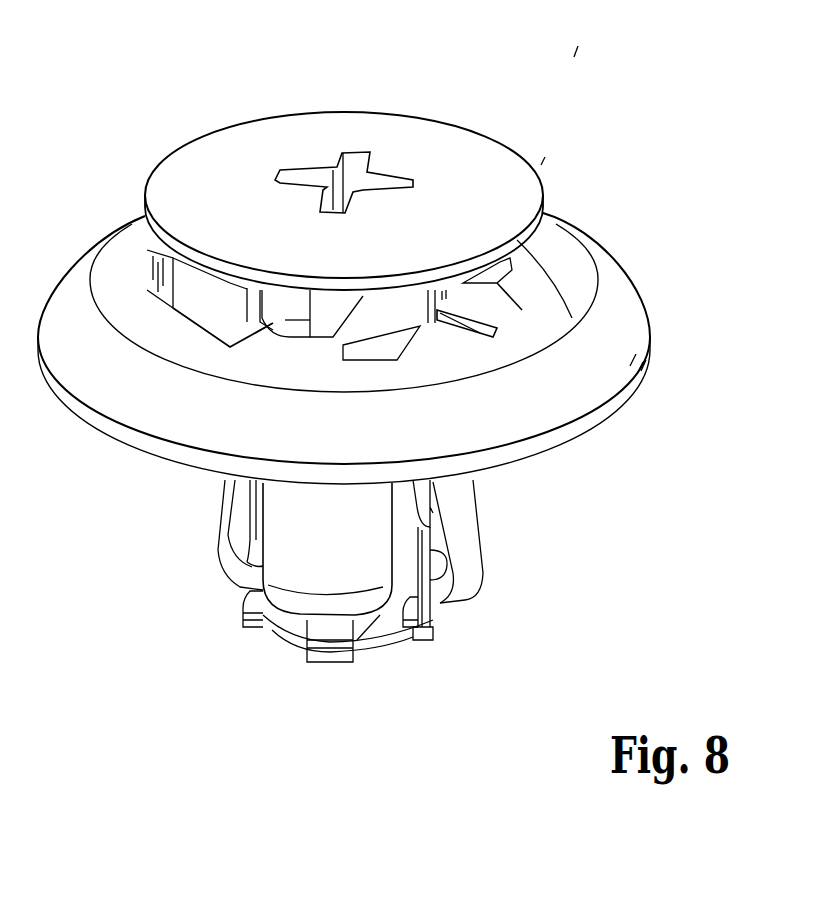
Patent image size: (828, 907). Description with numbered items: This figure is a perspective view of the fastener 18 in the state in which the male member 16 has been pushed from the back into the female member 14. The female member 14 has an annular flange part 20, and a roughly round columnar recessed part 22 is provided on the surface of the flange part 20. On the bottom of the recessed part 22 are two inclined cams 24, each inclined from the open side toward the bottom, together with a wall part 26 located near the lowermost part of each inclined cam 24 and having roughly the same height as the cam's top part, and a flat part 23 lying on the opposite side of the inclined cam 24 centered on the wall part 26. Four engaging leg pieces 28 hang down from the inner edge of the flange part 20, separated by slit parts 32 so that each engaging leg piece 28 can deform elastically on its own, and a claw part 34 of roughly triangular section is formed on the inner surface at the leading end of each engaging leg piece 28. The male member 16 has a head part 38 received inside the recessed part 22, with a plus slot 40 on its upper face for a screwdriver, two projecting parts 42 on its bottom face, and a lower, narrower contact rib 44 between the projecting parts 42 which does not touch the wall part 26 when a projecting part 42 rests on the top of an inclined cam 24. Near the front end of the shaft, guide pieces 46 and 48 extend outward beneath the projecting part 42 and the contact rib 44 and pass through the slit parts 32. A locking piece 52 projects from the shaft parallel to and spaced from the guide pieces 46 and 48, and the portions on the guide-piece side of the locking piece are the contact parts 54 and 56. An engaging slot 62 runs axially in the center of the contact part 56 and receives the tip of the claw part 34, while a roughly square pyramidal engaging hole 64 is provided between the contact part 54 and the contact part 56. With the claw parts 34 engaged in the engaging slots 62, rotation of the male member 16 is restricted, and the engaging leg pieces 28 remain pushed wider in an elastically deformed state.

The female member 14 is at (650, 294).
The male member 16 is at (544, 160).
The fastener 18 is at (576, 53).
The flange part 20 is at (605, 263).
The recessed part 22 is at (533, 273).
The flat part 23 is at (177, 323).
The inclined cam 24 is at (185, 286).
The wall part 26 is at (270, 347).
The engaging leg piece 28 is at (262, 525).
The slit part 32 is at (248, 560).
The claw part 34 is at (415, 638).
The head part 38 is at (453, 136).
The plus slot 40 is at (358, 167).
The projecting part 42 is at (297, 320).
The contact rib 44 is at (502, 310).
The guide piece 46 is at (327, 655).
The guide piece 48 is at (243, 603).
The locking piece 52 is at (413, 494).
The contact part 54 is at (290, 640).
The contact part 56 is at (438, 565).
The engaging slot 62 is at (430, 557).
The engaging hole 64 is at (392, 617).